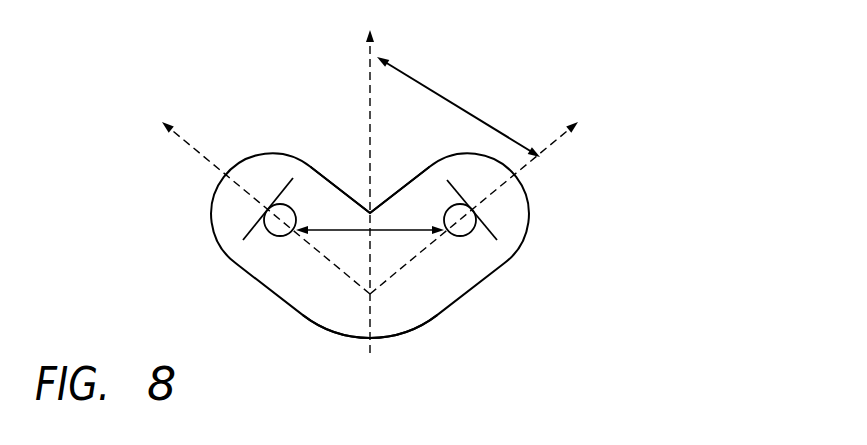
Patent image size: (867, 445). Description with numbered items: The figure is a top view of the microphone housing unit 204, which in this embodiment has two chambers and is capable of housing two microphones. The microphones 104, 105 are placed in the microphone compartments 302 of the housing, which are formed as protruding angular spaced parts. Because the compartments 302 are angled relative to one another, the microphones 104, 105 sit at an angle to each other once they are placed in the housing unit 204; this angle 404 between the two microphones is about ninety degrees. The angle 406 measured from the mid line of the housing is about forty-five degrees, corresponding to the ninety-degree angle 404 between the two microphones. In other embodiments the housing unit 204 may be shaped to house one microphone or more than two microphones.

The microphone 104 is at (268, 229).
The microphone 105 is at (467, 233).
The microphone housing unit 204 is at (393, 337).
The microphone compartment 302 is at (512, 210).
The angle between the two microphones 404 is at (345, 227).
The angle from the mid line 406 is at (455, 100).